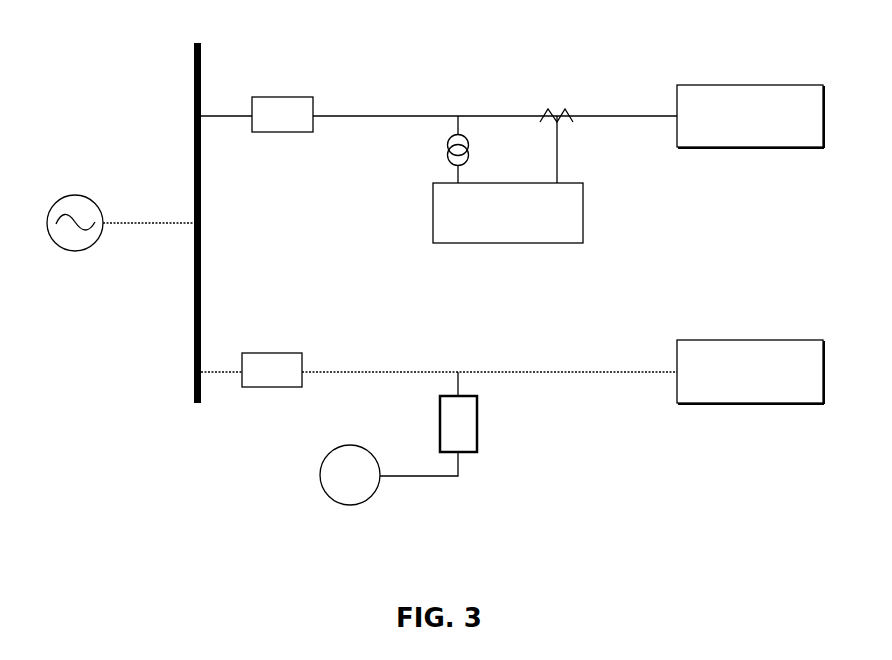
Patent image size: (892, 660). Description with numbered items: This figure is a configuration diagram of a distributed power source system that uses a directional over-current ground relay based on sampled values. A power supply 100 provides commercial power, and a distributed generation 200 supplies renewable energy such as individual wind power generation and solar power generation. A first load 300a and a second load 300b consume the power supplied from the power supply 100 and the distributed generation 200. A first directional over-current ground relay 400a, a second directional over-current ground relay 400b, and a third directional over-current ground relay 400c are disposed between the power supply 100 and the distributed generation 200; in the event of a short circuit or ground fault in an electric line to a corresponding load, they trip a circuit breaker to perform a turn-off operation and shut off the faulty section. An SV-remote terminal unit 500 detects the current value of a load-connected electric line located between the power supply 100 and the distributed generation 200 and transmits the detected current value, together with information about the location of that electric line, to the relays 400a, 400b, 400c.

The power supply 100 is at (75, 194).
The distributed generation (DG) 200 is at (350, 505).
The first load 300a is at (751, 85).
The second load 300b is at (751, 340).
The first directional over-current ground relay (DOCGR) 400a is at (282, 132).
The second directional over-current ground relay (DOCGR) 400b is at (270, 387).
The third directional over-current ground relay (DOCGR) 400c is at (477, 423).
The SV-remote terminal unit (SV-RTU) 500 is at (510, 243).